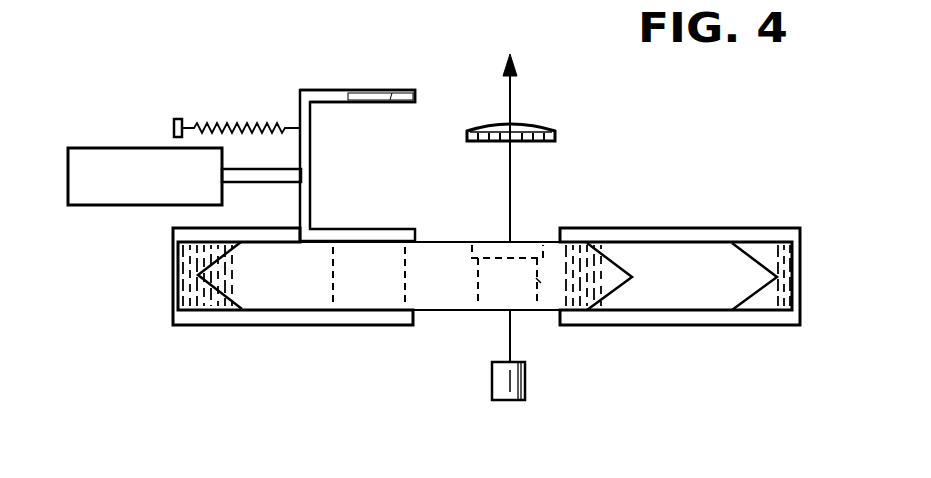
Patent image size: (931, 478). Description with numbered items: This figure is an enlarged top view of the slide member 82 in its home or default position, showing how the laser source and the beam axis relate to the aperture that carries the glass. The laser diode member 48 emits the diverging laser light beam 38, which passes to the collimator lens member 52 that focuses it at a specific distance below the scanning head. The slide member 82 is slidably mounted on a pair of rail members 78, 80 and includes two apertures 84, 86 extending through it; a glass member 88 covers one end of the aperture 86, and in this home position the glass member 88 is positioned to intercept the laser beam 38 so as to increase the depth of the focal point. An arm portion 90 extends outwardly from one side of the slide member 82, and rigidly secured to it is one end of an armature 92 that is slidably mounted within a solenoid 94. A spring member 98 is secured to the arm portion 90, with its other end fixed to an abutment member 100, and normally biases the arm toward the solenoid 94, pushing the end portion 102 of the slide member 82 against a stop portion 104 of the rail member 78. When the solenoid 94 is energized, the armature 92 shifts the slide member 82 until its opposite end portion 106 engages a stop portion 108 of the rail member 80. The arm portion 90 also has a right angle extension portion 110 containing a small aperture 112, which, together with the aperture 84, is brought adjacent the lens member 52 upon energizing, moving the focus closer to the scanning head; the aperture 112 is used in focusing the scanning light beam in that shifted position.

The laser light beam 38 is at (508, 187).
The laser diode member 48 is at (526, 368).
The collimator lens member 52 is at (556, 128).
The rail member 78 is at (213, 326).
The rail member 80 is at (750, 325).
The slide member 82 is at (450, 316).
The aperture 84 is at (332, 286).
The aperture 86 is at (541, 283).
The glass member 88 is at (522, 252).
The arm portion 90 is at (312, 163).
The armature 92 is at (284, 183).
The solenoid 94 is at (70, 147).
The spring member 98 is at (238, 126).
The abutment member 100 is at (177, 121).
The end portion 102 is at (233, 272).
The stop portion 104 is at (172, 294).
The end portion 106 is at (612, 277).
The stop portion 108 is at (763, 253).
The right angle extension portion 110 is at (328, 90).
The aperture 112 is at (394, 88).